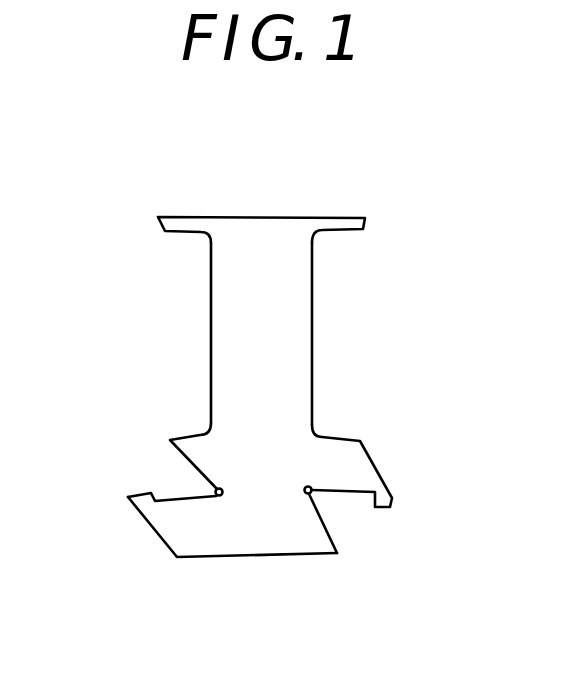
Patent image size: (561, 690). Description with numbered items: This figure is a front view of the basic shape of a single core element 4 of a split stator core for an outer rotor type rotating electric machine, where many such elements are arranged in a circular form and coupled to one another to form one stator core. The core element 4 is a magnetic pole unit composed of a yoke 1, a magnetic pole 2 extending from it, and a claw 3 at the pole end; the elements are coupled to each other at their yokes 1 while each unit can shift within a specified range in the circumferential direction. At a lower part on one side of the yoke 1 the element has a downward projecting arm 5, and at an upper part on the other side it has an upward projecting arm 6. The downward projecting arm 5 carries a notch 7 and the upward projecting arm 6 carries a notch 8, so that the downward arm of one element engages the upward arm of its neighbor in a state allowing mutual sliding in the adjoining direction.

The yoke 1 is at (245, 538).
The magnetic pole 2 is at (298, 333).
The claw 3 is at (365, 222).
The core element 4 is at (190, 345).
The downward projecting arm 5 is at (373, 468).
The upward projecting arm 6 is at (183, 535).
The notch 7 is at (343, 492).
The notch 8 is at (170, 500).